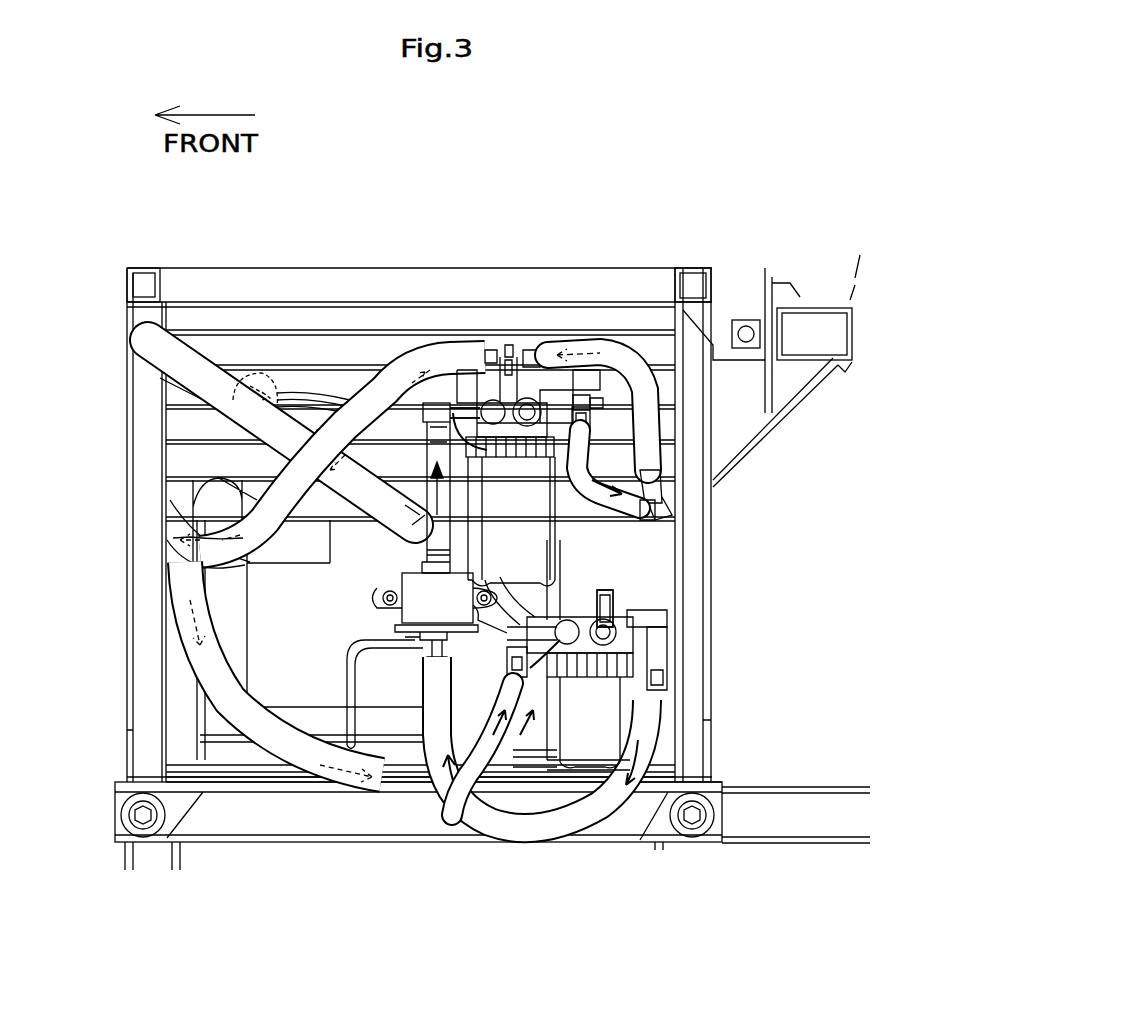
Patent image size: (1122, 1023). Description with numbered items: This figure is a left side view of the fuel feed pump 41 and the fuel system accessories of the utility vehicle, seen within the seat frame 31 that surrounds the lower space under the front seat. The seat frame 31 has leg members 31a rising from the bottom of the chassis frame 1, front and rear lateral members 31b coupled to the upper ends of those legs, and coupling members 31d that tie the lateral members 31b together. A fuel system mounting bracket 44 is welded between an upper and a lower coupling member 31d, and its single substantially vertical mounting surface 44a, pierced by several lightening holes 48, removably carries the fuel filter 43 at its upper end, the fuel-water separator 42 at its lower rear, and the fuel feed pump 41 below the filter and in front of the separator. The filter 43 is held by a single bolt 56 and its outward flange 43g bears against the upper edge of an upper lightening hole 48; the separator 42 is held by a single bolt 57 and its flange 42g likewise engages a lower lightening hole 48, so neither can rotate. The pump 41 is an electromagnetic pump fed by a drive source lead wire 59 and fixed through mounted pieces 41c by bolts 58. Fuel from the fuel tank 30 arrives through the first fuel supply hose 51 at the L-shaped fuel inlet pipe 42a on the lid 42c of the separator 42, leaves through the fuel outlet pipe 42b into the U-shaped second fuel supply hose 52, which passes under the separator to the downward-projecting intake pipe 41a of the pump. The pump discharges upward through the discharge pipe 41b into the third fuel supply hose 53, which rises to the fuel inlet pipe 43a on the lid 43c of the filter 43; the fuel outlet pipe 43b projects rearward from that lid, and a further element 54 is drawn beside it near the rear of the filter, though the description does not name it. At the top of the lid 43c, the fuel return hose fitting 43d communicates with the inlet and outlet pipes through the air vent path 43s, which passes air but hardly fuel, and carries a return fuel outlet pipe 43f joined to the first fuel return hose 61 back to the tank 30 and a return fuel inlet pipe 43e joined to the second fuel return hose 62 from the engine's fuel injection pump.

The chassis frame 1 is at (253, 845).
The fuel tank 30 is at (257, 500).
The seat frame 31 is at (334, 250).
The leg member 31a is at (148, 727).
The lateral member 31b is at (148, 272).
The coupling member 31d is at (272, 345).
The fuel feed pump 41 is at (370, 588).
The intake pipe 41a is at (415, 660).
The discharge pipe 41b is at (428, 553).
The mounted piece 41c is at (380, 617).
The fuel-water separator 42 is at (637, 651).
The fuel inlet pipe 42a is at (545, 628).
The fuel outlet pipe 42b is at (667, 635).
The lid 42c is at (613, 620).
The flange 42g is at (573, 711).
The fuel filter 43 is at (509, 411).
The fuel inlet pipe 43a is at (418, 424).
The fuel outlet pipe 43b is at (590, 397).
The lid 43c is at (425, 372).
The fuel return hose fitting 43d is at (512, 345).
The return fuel inlet pipe 43e is at (533, 350).
The return fuel outlet pipe 43f is at (488, 350).
The outward flange 43g is at (512, 458).
The air vent path 43s is at (467, 357).
The fuel system mounting bracket 44 is at (530, 710).
The mounting surface 44a is at (657, 518).
The lightening hole 48 is at (477, 667).
The first fuel supply hose 51 is at (230, 708).
The second fuel supply hose 52 is at (540, 835).
The third fuel supply hose 53 is at (415, 512).
The drain hose 54 is at (608, 469).
The bolt 56 is at (592, 430).
The bolt 57 is at (667, 617).
The bolt 58 is at (377, 600).
The drive source lead wire 59 is at (340, 693).
The first fuel return hose 61 is at (243, 373).
The second fuel return hose 62 is at (634, 363).